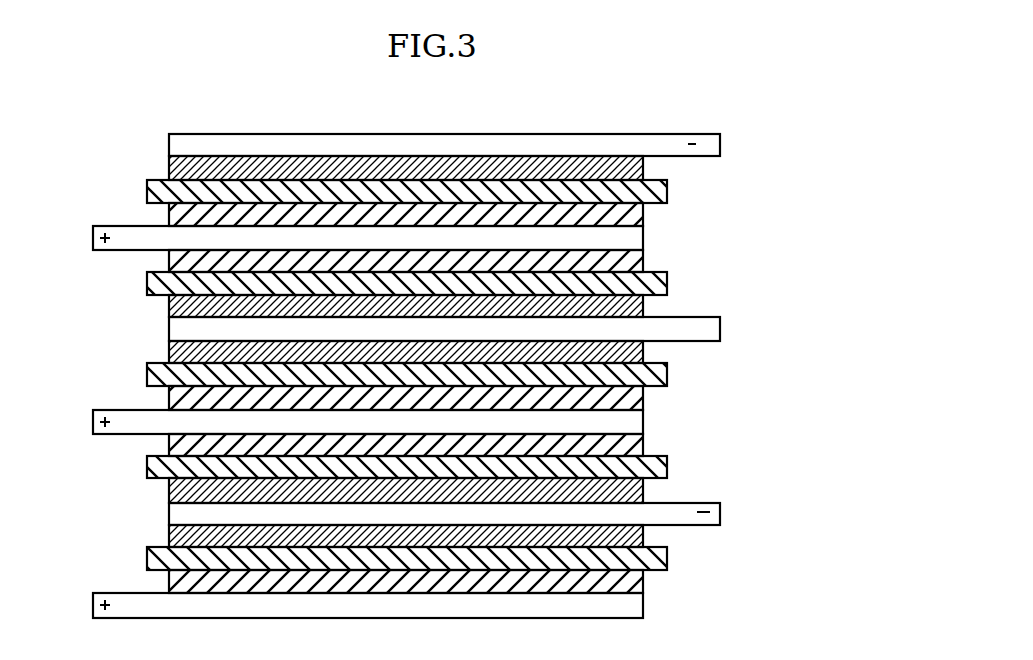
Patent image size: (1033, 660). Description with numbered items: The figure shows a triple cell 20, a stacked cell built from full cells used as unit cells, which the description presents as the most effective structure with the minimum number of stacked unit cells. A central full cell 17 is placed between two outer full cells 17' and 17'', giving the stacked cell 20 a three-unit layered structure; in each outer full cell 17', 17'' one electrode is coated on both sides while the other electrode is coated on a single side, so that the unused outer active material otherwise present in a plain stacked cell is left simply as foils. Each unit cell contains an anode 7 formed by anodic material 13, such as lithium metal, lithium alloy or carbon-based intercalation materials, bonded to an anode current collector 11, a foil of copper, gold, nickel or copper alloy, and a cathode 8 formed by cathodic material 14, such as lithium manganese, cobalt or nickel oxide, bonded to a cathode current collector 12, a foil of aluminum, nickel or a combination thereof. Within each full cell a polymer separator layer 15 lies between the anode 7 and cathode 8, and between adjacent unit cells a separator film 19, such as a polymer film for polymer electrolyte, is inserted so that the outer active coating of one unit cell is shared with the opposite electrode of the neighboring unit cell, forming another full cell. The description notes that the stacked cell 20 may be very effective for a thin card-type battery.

The anode 7 is at (792, 120).
The cathode 8 is at (716, 205).
The anode current collector 11 is at (700, 146).
The cathode current collector 12 is at (640, 237).
The anodic material 13 is at (645, 172).
The cathodic material 14 is at (645, 215).
The separator layer 15 is at (668, 192).
The full cell 17 is at (53, 371).
The full cell 17' is at (50, 200).
The full cell 17'' is at (49, 560).
The separator film 19 is at (150, 284).
The triple cell 20 is at (768, 432).